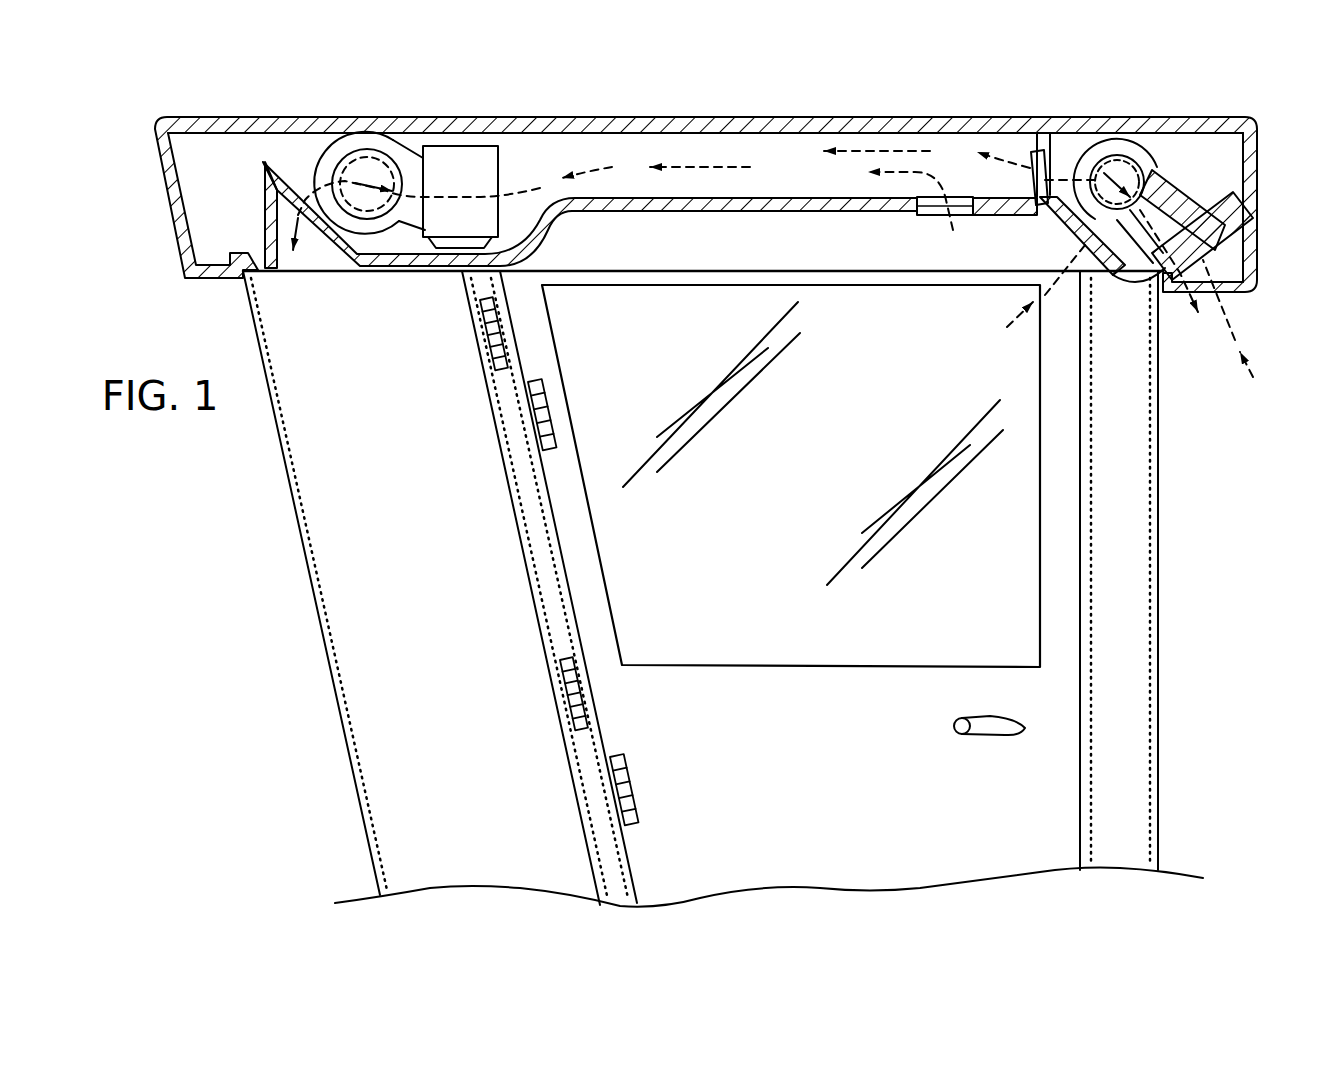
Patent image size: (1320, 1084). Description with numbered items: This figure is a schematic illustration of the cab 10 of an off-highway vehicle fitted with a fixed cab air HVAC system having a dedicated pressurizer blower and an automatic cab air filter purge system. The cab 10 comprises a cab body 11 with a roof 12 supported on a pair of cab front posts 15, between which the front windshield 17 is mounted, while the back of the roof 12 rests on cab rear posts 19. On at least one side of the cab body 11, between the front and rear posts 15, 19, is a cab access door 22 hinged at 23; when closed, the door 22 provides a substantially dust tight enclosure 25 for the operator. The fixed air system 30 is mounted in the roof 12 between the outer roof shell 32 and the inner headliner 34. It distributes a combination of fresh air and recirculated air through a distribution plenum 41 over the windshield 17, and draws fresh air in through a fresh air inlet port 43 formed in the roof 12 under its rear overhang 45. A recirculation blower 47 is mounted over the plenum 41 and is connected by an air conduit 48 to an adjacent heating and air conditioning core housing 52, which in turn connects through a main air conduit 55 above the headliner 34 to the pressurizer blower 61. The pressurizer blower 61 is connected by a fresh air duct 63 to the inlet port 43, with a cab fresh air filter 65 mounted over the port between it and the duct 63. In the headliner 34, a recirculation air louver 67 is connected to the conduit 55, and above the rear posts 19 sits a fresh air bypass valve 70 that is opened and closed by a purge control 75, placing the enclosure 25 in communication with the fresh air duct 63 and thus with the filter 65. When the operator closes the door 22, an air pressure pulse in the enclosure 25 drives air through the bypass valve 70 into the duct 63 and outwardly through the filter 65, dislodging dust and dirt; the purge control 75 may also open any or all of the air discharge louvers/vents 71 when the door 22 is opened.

The cab 10 is at (238, 651).
The cab body 11 is at (535, 626).
The roof 12 is at (700, 117).
The cab front posts 15 is at (538, 520).
The front windshield 17 is at (372, 502).
The cab rear posts 19 is at (1105, 621).
The cab access door 22 is at (849, 812).
The hinge 23 is at (545, 393).
The enclosure 25 is at (767, 504).
The fixed air system 30 is at (548, 150).
The outer roof shell 32 is at (838, 118).
The inner headliner 34 is at (712, 212).
The distribution plenum 41 is at (275, 213).
The fresh air inlet port 43 is at (1172, 295).
The rear overhang 45 is at (1262, 165).
The recirculation blower 47 is at (352, 160).
The air conduit 48 is at (410, 152).
The heating and air conditioning core housing 52 is at (444, 181).
The main air conduit 55 is at (757, 145).
The pressurizer blower 61 is at (1105, 150).
The fresh air duct 63 is at (1180, 195).
The cab fresh air filter 65 is at (1238, 197).
The recirculation air louver 67 is at (940, 213).
The fresh air bypass valve 70 is at (1067, 258).
The air discharge louvers/vents 71 is at (485, 345).
The purge control 75 is at (1042, 172).